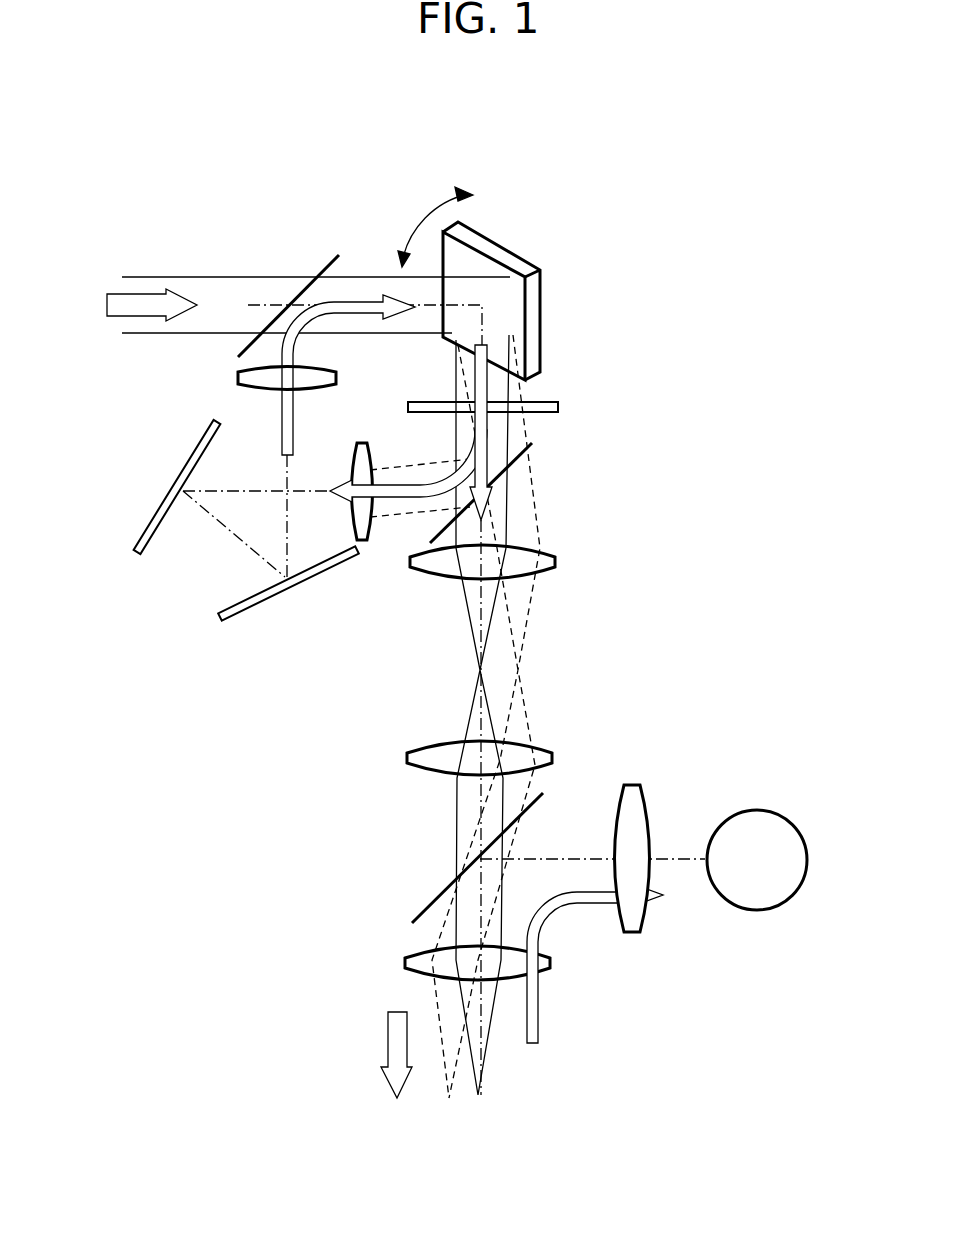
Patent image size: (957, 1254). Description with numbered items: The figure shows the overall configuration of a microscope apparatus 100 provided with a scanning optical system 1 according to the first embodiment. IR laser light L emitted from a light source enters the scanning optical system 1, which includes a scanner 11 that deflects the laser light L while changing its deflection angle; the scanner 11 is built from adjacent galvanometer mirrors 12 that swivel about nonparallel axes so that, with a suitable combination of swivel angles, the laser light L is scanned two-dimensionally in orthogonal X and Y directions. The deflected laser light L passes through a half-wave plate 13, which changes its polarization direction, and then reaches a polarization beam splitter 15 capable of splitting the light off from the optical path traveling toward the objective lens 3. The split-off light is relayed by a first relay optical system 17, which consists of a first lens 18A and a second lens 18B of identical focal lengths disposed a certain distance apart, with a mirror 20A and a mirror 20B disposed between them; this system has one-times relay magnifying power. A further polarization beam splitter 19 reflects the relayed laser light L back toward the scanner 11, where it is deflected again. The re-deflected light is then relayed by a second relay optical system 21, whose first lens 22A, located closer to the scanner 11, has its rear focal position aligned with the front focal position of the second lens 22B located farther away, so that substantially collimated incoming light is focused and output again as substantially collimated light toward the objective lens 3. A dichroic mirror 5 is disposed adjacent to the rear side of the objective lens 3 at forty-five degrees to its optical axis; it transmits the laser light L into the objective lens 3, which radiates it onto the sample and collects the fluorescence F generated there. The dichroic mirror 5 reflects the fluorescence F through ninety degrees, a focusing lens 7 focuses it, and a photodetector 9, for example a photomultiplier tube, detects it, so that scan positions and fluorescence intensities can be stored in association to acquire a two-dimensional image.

The microscope apparatus 100 is at (715, 145).
The scanning optical system 1 is at (690, 343).
The laser light L is at (210, 277).
The polarization beam splitter (optical-path combining unit) 19 is at (327, 263).
The second lens 18B is at (238, 378).
The scanner 11 is at (518, 271).
The galvanometer mirror 12 is at (542, 288).
The half-wave plate (polarizing element) 13 is at (560, 408).
The first relay optical system (reentry relay optical system) 17 is at (250, 549).
The mirror 20A is at (197, 451).
The mirror 20B is at (317, 575).
The first lens 18A is at (367, 537).
The polarization beam splitter (light splitting unit) 15 is at (497, 481).
The second relay optical system (pupil-projection relay optical system) 21 is at (565, 660).
The first lens 22A is at (558, 562).
The second lens 22B is at (537, 759).
The dichroic mirror 5 is at (430, 902).
The objective lens 3 is at (405, 963).
The fluorescence F is at (680, 862).
The focusing lens 7 is at (628, 933).
The photodetector 9 is at (757, 910).